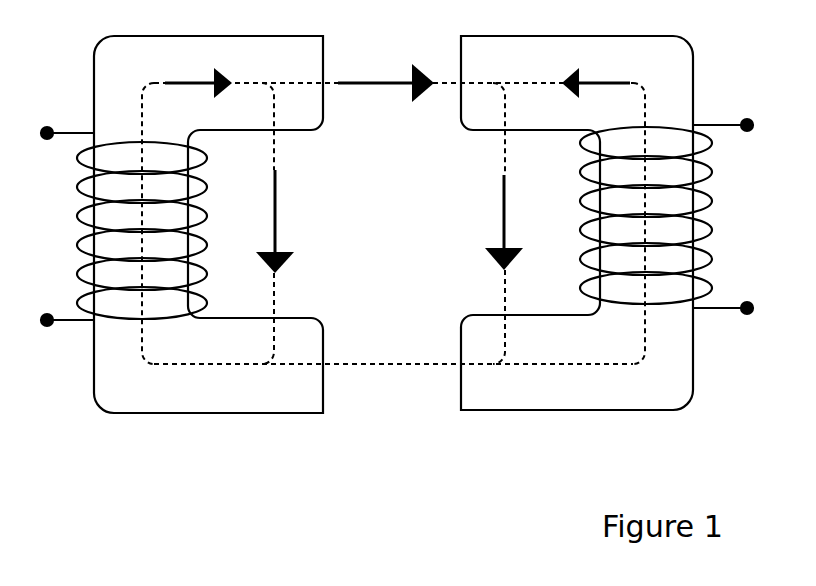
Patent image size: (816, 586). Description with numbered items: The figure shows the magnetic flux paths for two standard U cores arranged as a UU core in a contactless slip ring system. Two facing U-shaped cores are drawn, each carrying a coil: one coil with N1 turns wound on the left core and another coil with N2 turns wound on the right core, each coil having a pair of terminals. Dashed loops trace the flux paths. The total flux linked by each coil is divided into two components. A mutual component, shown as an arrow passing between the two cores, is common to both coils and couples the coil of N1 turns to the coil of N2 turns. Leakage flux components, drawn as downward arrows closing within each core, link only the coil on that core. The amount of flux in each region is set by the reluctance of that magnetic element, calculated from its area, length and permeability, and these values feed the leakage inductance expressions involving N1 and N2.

The primary coil turns N1 is at (121, 226).
The secondary coil turns N2 is at (671, 216).